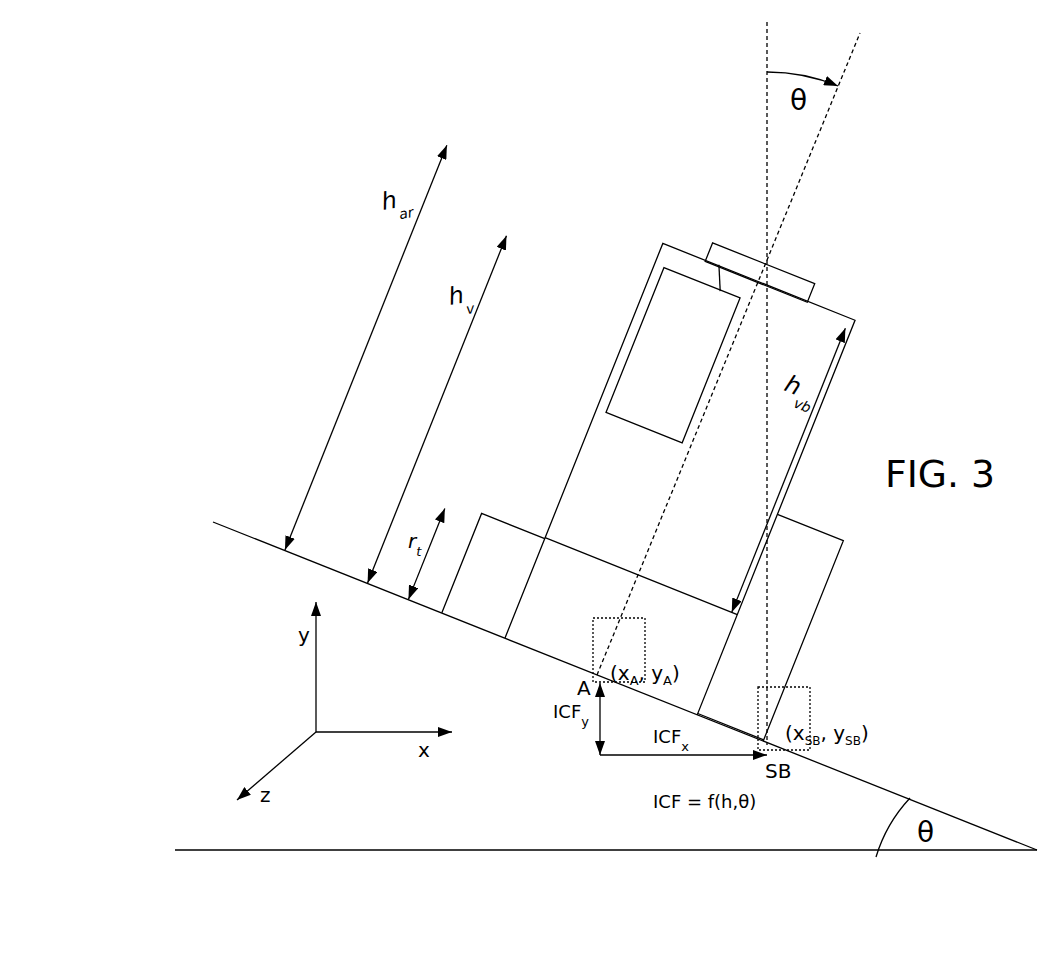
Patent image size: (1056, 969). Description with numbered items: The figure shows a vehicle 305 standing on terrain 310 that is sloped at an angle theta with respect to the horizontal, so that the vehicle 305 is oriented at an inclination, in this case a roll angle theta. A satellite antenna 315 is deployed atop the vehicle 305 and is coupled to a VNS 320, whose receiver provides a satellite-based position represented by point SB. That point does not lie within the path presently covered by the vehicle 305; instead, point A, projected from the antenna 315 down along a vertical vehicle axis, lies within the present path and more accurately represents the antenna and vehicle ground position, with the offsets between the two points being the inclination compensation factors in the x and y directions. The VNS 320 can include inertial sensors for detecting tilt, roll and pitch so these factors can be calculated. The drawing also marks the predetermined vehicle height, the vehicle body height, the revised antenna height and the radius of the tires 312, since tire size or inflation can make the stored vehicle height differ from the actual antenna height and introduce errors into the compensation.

The vehicle 305 is at (833, 388).
The terrain 310 is at (928, 805).
The tires 312 is at (820, 601).
The satellite antenna 315 is at (808, 262).
The VNS 320 is at (697, 332).